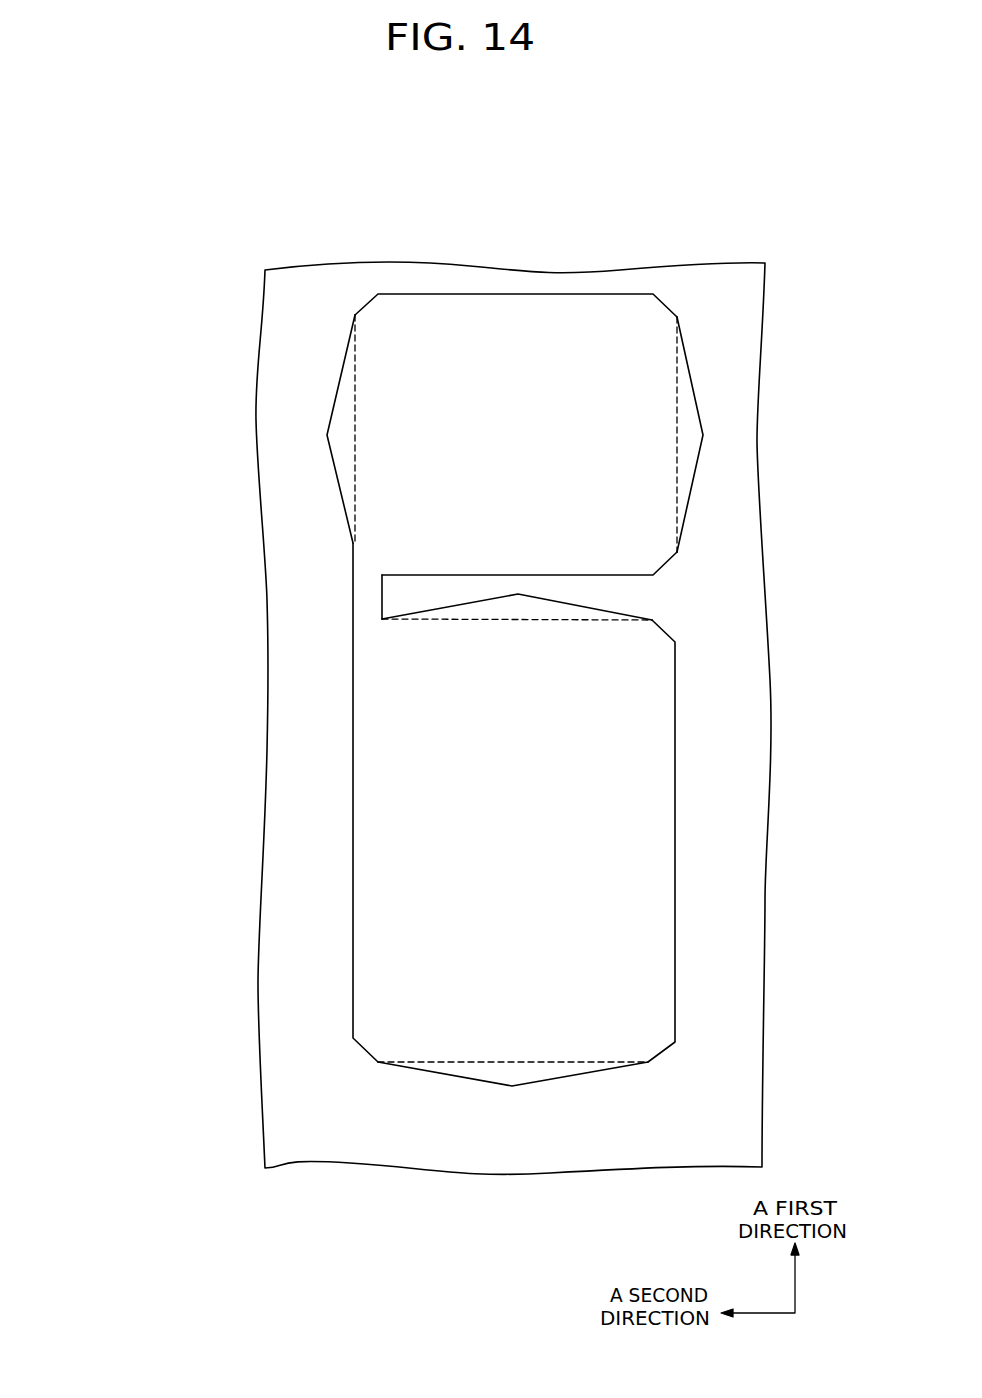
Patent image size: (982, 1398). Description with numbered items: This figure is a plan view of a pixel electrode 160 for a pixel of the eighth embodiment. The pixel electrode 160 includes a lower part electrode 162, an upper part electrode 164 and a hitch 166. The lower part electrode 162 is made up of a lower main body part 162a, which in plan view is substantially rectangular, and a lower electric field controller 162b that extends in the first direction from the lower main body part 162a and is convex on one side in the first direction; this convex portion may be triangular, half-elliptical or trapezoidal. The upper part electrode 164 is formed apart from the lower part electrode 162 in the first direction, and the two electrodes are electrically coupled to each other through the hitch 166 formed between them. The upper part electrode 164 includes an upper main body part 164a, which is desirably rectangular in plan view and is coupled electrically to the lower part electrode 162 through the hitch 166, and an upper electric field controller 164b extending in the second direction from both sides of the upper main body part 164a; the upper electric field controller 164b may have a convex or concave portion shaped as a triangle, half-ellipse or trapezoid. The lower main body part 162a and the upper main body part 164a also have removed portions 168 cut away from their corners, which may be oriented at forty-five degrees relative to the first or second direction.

The pixel electrode 160 is at (98, 438).
The lower part electrode 162 is at (168, 677).
The lower main body part 162a is at (450, 770).
The lower electric field controller 162b is at (498, 609).
The upper part electrode 164 is at (168, 405).
The upper main body part 164a is at (428, 480).
The upper electric field controller 164b is at (347, 415).
The hitch 166 is at (382, 595).
The removed portions 168 is at (360, 1052).